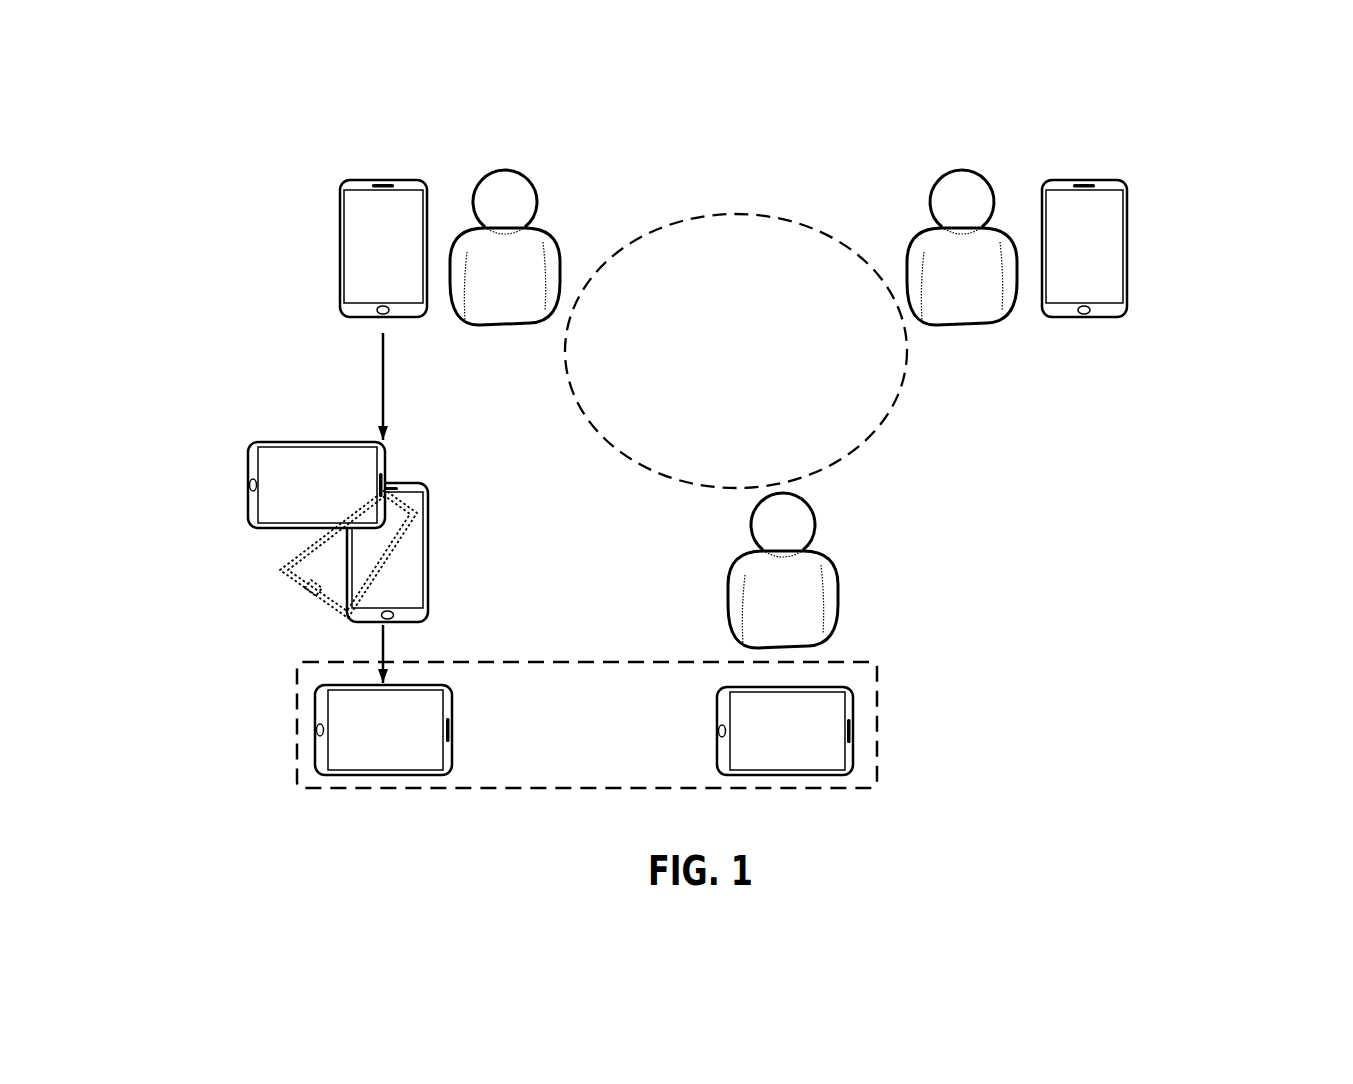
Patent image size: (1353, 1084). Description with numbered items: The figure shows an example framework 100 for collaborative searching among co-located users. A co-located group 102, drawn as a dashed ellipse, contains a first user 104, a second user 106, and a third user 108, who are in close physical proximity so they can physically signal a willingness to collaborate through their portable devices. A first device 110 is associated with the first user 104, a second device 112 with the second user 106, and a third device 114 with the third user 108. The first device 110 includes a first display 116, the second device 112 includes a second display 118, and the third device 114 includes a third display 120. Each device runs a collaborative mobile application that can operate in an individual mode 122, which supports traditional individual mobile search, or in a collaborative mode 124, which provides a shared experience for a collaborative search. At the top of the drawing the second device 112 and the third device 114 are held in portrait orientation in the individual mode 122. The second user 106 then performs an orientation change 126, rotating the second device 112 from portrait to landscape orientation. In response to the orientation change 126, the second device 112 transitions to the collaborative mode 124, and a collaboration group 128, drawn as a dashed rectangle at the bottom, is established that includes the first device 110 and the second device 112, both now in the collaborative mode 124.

The framework 100 is at (140, 135).
The co-located group 102 is at (891, 351).
The first user 104 is at (802, 561).
The second user 106 is at (490, 229).
The third user 108 is at (946, 230).
The first device 110 is at (846, 721).
The second device 112 is at (341, 459).
The third device 114 is at (1123, 237).
The first display 116 is at (772, 741).
The second display 118 is at (368, 257).
The third display 120 is at (1069, 256).
The individual mode 122 is at (842, 317).
The collaborative mode 124 is at (786, 759).
The orientation change 126 is at (505, 554).
The collaboration group 128 is at (771, 742).